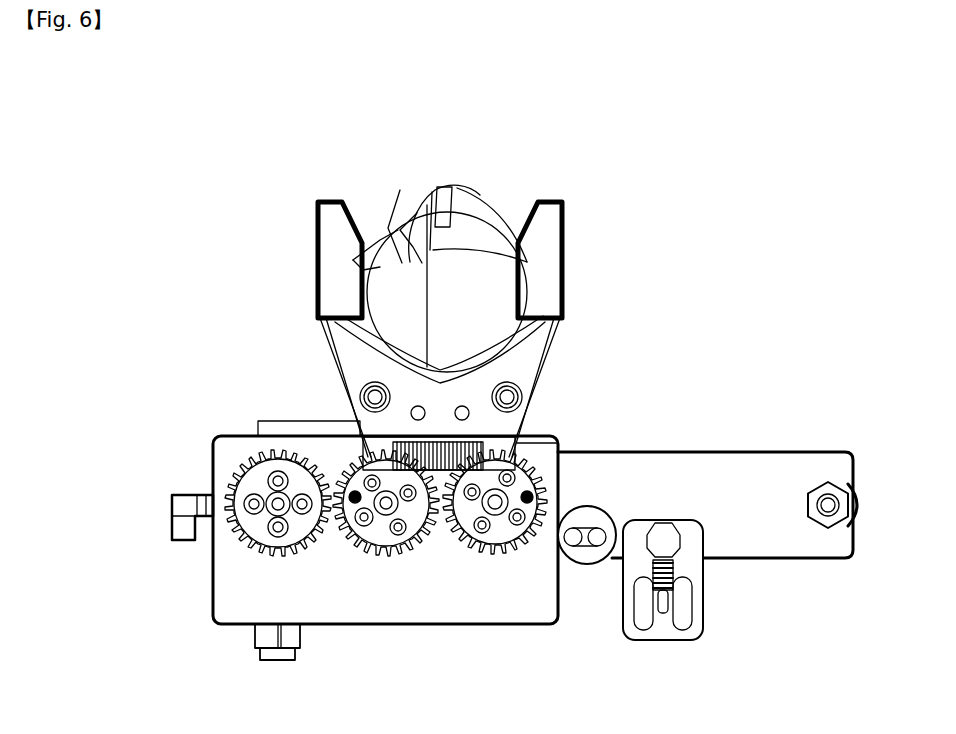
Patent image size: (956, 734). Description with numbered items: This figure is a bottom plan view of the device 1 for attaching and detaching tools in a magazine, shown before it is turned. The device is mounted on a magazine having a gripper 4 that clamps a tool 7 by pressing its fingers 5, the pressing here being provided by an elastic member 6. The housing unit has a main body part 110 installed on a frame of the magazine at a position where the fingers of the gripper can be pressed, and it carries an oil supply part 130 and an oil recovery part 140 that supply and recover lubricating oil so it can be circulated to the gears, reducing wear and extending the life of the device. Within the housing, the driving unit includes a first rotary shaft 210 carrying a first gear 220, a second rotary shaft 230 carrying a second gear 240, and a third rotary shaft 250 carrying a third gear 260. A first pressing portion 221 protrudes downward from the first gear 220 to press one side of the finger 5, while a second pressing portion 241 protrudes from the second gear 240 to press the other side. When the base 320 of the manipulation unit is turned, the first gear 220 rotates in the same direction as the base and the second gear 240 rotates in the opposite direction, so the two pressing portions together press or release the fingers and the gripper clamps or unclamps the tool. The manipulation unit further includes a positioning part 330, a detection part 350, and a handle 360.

The device for attaching and detaching tools in a magazine 1 is at (167, 138).
The gripper 4 is at (355, 352).
The fingers 5 is at (383, 455).
The elastic member 6 is at (355, 413).
The tool 7 is at (402, 265).
The main body part 110 is at (237, 590).
The oil supply part 130 is at (172, 528).
The oil recovery part 140 is at (262, 638).
The first rotary shaft 210 is at (537, 467).
The first gear 220 is at (513, 470).
The first pressing portion 221 is at (533, 550).
The second rotary shaft 230 is at (415, 557).
The second gear 240 is at (410, 553).
The second pressing portion 241 is at (350, 550).
The third rotary shaft 250 is at (260, 498).
The third gear 260 is at (240, 475).
The base 320 is at (718, 475).
The positioning part 330 is at (583, 563).
The detection part 350 is at (668, 642).
The handle 360 is at (862, 505).